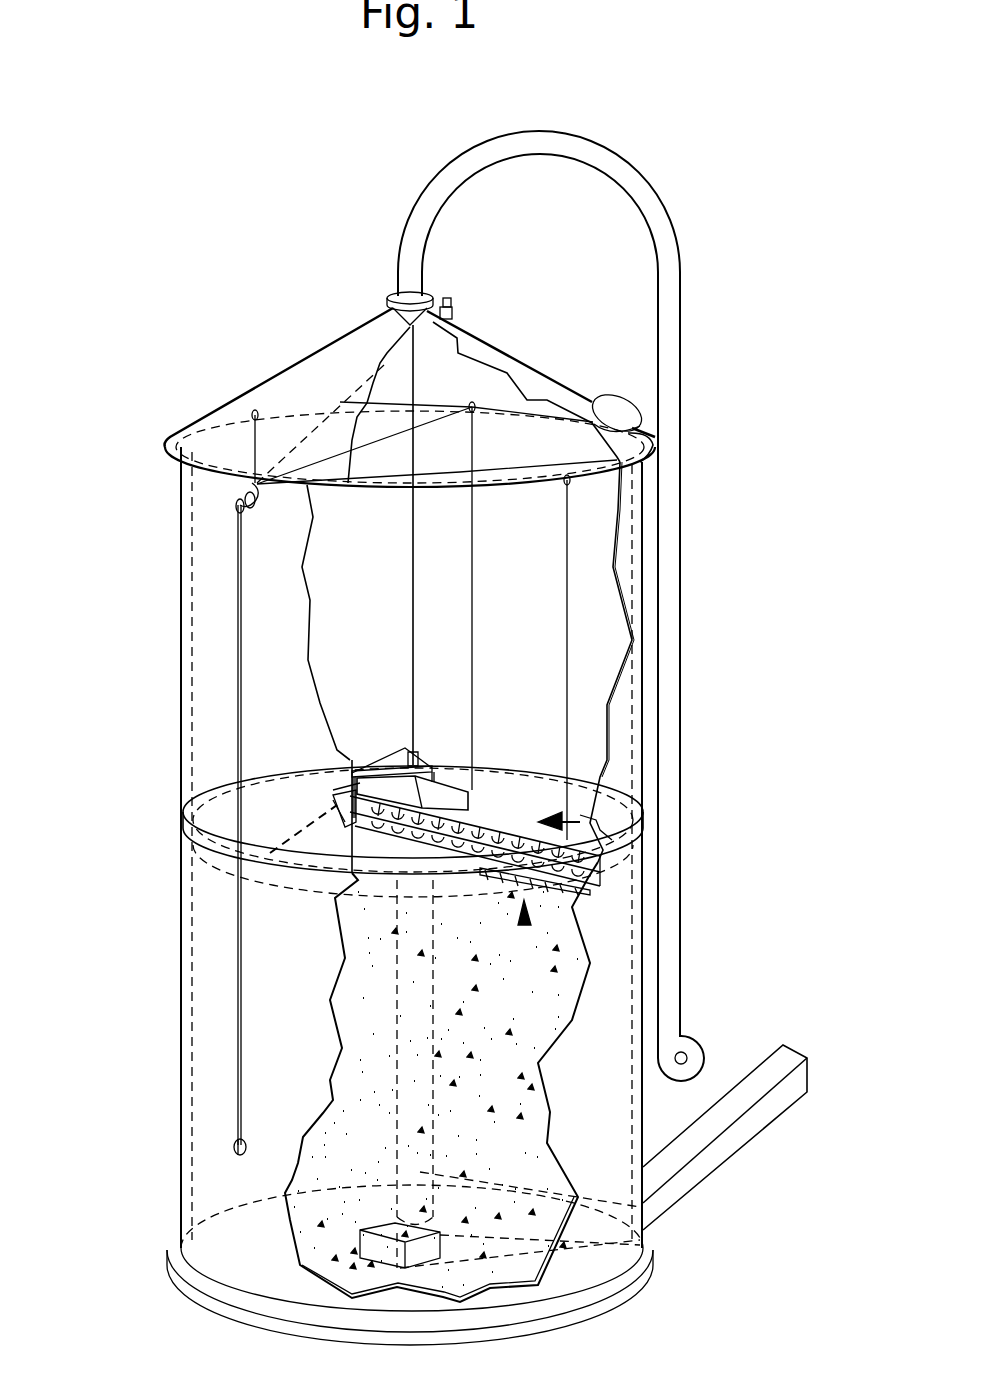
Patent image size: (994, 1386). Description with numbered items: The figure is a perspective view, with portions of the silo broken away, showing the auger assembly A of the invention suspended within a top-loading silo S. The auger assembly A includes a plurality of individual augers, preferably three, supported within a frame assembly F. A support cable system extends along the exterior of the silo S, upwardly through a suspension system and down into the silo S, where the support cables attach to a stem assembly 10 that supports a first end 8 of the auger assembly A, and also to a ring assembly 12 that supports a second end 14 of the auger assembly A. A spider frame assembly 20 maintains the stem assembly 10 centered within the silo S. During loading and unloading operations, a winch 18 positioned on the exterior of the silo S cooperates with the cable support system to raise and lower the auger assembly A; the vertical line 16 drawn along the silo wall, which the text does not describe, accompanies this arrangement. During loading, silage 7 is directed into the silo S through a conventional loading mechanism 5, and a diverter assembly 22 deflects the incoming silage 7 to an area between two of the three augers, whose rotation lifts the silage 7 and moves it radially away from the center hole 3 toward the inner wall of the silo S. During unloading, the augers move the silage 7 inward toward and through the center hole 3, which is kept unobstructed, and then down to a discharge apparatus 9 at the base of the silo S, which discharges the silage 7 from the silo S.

The silo S is at (125, 562).
The loading mechanism 5 is at (566, 147).
The discharge apparatus 9 is at (713, 1166).
The tether rod 16 is at (240, 683).
The winch 18 is at (232, 1146).
The spider frame assembly 20 is at (480, 765).
The silage 7 is at (342, 1048).
The center hole 3 is at (405, 990).
The stem assembly 10 is at (412, 757).
The first end 8 is at (335, 783).
The diverter assembly 22 is at (445, 795).
The ring assembly 12 is at (595, 868).
The second end 14 is at (530, 915).
The frame assembly F is at (553, 818).
The auger assembly A is at (580, 815).